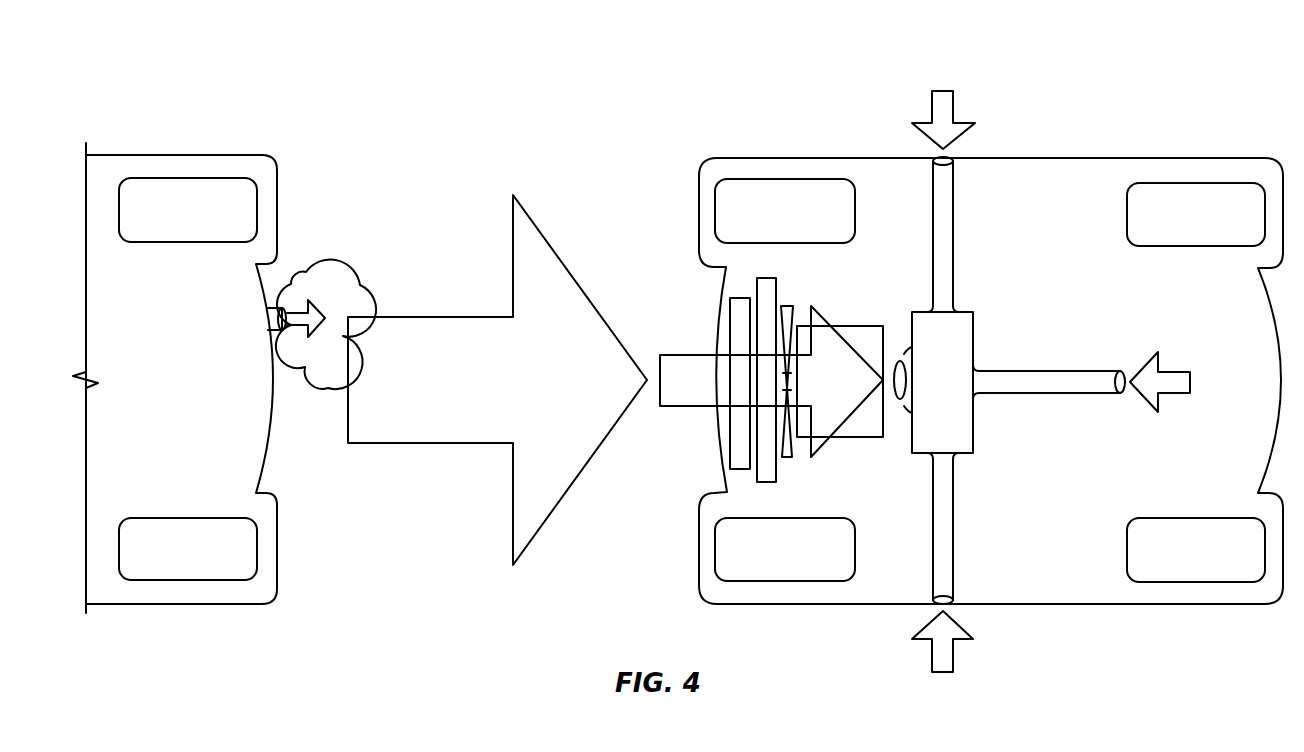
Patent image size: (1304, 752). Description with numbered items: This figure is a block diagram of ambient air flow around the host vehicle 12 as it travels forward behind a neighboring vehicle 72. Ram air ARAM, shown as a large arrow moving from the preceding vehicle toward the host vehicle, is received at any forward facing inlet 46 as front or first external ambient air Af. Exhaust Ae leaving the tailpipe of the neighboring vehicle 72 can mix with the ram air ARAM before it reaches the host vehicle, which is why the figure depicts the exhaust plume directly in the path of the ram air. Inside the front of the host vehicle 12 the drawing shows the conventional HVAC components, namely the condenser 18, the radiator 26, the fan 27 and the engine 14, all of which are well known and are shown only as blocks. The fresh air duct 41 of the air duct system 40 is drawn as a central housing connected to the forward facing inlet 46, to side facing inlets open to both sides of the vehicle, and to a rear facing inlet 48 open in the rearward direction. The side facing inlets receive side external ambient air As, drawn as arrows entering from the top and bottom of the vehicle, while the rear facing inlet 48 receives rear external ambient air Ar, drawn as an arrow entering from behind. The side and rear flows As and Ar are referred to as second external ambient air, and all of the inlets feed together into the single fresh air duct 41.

The vehicle 12 is at (1158, 154).
The neighboring vehicle 72 is at (186, 150).
The engine 14 is at (866, 326).
The condenser 18 is at (742, 298).
The radiator 26 is at (767, 278).
The fan 27 is at (788, 306).
The air duct system 40 is at (1003, 380).
The fresh air duct 41 is at (963, 427).
The forward facing inlet 46 is at (899, 360).
The rear facing inlet 48 is at (1050, 370).
The exhaust Ae is at (322, 297).
The ram air ARAM is at (431, 315).
The front external ambient air Af is at (687, 356).
The rear external ambient air Ar is at (1177, 370).
The side external ambient air As is at (943, 90).